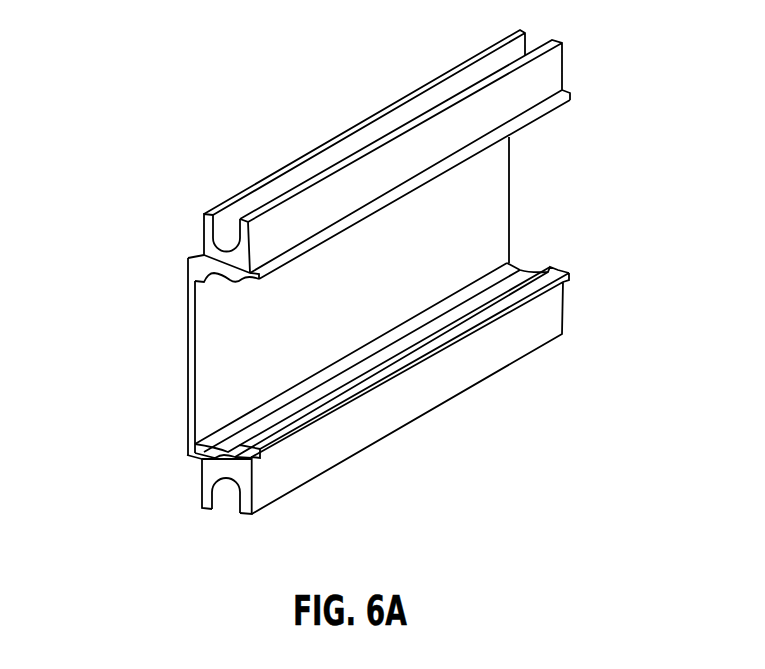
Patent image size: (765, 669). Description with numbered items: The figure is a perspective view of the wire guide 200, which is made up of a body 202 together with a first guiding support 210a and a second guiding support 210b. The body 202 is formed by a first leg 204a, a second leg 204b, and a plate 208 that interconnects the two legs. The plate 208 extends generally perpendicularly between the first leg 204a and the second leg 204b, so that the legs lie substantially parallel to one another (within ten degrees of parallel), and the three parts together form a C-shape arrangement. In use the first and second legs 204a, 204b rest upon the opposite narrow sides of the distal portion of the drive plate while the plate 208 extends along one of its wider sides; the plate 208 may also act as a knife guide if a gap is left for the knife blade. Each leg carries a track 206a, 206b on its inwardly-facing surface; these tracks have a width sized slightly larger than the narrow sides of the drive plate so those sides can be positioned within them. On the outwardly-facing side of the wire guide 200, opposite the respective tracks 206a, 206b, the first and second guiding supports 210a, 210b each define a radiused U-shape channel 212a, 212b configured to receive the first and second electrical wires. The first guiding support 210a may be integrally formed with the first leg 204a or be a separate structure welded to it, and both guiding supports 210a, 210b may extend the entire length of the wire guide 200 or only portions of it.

The wire guide 200 is at (372, 291).
The body 202 is at (388, 291).
The first leg 204a is at (188, 266).
The second leg 204b is at (190, 455).
The track 206a is at (215, 280).
The track 206b is at (223, 447).
The plate 208 is at (497, 203).
The first guiding support 210a is at (381, 154).
The second guiding support 210b is at (348, 413).
The U-shape channel 212a is at (373, 134).
The U-shape channel 212b is at (223, 512).